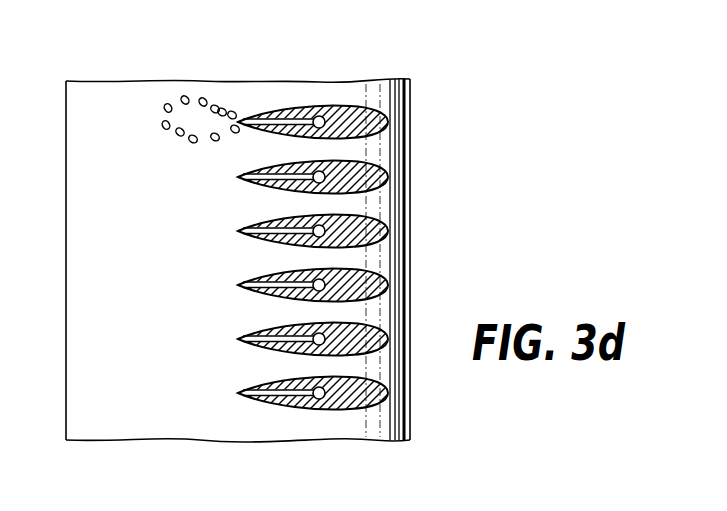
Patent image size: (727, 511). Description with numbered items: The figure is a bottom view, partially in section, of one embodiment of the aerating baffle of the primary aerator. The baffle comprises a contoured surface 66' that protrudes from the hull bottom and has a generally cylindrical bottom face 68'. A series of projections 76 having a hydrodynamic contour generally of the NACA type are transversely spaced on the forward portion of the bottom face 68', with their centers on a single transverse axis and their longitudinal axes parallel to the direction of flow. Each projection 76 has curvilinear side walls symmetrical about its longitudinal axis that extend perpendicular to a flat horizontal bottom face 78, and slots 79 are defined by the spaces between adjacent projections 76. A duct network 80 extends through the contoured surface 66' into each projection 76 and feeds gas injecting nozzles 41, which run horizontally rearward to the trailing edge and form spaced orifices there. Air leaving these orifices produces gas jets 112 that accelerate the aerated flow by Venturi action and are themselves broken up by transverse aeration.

The gas injecting nozzles 41 is at (326, 425).
The contoured surface 66' is at (223, 86).
The bottom face 68' is at (207, 260).
The projections 76 is at (372, 108).
The flat horizontal bottom face 78 is at (377, 180).
The slots 79 is at (372, 209).
The duct network 80 is at (322, 401).
The gas jets 112 is at (215, 107).